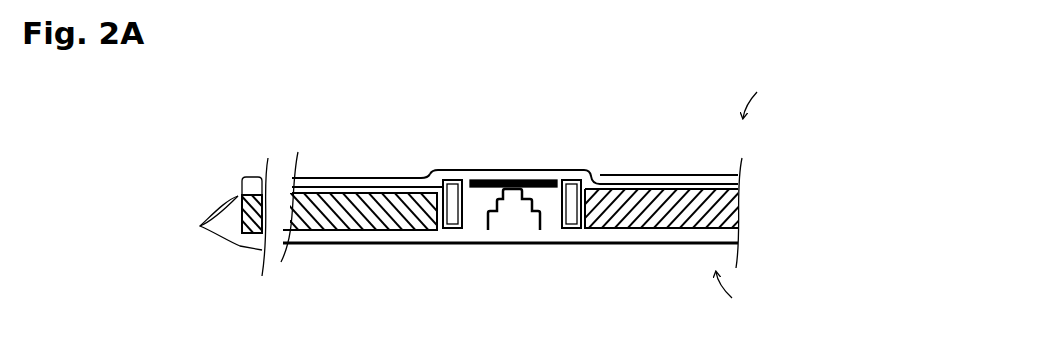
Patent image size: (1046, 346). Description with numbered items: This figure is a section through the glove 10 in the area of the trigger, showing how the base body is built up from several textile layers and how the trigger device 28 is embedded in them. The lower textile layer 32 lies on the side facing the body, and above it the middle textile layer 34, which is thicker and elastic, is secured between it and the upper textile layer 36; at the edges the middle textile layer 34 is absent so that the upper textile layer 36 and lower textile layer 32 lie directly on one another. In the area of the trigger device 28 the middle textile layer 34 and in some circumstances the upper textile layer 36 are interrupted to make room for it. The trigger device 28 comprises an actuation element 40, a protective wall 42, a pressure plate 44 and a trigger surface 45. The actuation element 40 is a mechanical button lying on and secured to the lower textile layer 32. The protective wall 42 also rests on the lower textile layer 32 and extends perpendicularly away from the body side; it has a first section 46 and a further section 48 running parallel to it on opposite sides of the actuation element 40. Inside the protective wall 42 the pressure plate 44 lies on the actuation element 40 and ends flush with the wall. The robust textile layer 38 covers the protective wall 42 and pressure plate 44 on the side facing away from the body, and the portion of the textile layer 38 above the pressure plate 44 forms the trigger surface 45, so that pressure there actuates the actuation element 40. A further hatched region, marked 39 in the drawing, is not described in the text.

The glove 10 is at (214, 86).
The trigger device 28 is at (584, 107).
The lower textile layer 32 is at (232, 246).
The middle textile layer 34 is at (243, 200).
The upper textile layer 36 is at (244, 178).
The textile layer 38 is at (393, 178).
The right filler layer 39 is at (727, 208).
The actuation element 40 is at (533, 235).
The protective wall 42 is at (535, 244).
The pressure plate 44 is at (490, 180).
The trigger surface 45 is at (541, 165).
The first section 46 is at (455, 213).
The further section 48 is at (581, 222).